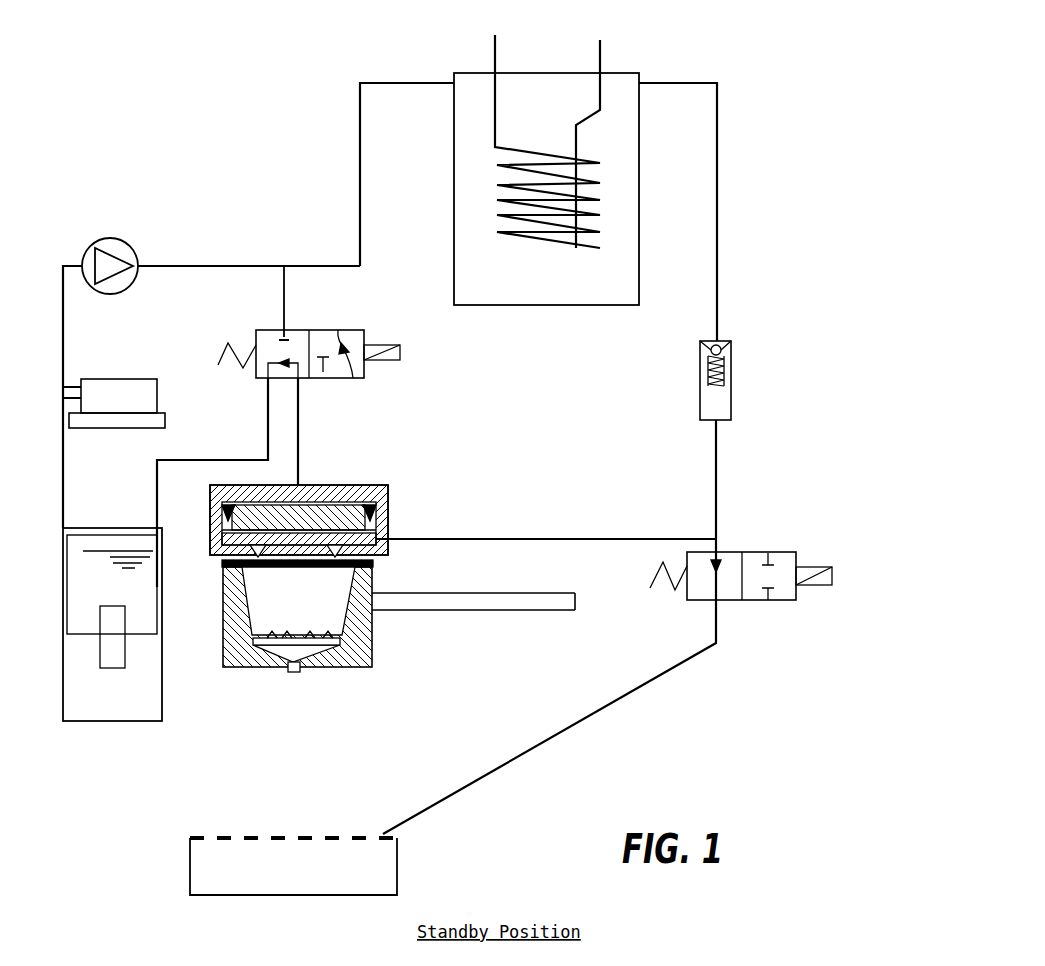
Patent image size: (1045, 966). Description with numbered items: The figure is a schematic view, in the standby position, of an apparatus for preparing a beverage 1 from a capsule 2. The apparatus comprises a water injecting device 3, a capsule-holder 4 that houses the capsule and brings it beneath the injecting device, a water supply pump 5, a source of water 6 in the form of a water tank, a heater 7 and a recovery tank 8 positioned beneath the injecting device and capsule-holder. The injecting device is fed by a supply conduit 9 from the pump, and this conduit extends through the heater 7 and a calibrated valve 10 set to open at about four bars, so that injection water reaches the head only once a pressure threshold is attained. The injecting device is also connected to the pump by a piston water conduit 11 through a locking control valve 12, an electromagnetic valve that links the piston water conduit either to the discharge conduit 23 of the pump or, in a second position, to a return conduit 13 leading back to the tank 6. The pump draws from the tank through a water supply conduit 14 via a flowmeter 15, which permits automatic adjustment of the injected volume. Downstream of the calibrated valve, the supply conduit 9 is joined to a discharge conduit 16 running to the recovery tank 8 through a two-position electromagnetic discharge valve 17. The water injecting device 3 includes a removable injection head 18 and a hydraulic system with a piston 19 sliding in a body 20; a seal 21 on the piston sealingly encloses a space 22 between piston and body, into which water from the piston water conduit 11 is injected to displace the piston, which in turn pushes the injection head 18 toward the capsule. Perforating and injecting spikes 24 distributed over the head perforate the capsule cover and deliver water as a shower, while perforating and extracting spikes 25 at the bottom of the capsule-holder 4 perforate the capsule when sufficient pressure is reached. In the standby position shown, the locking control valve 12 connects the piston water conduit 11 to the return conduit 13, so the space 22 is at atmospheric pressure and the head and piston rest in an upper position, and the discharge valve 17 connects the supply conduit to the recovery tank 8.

The beverage 1 is at (752, 82).
The capsule 2 is at (356, 621).
The water injecting device 3 is at (428, 526).
The capsule-holder 4 is at (426, 590).
The water supply pump 5 is at (128, 236).
The source of water 6 is at (173, 678).
The heater 7 is at (554, 312).
The recovery tank 8 is at (338, 832).
The supply conduit 9 is at (357, 165).
The calibrated valve 10 is at (745, 350).
The piston water conduit 11 is at (300, 447).
The locking control valve 12 is at (347, 318).
The return conduit 13 is at (207, 461).
The water supply conduit 14 is at (63, 512).
The flowmeter 15 is at (173, 400).
The discharge conduit 16 is at (603, 712).
The discharge valve 17 is at (745, 543).
The injection head 18 is at (222, 540).
The piston 19 is at (372, 486).
The body 20 is at (267, 497).
The seal 21 is at (388, 507).
The space 22 is at (334, 509).
The discharge conduit 23 is at (208, 263).
The perforating and injecting spikes 24 is at (338, 553).
The perforating and extracting spikes 25 is at (327, 646).